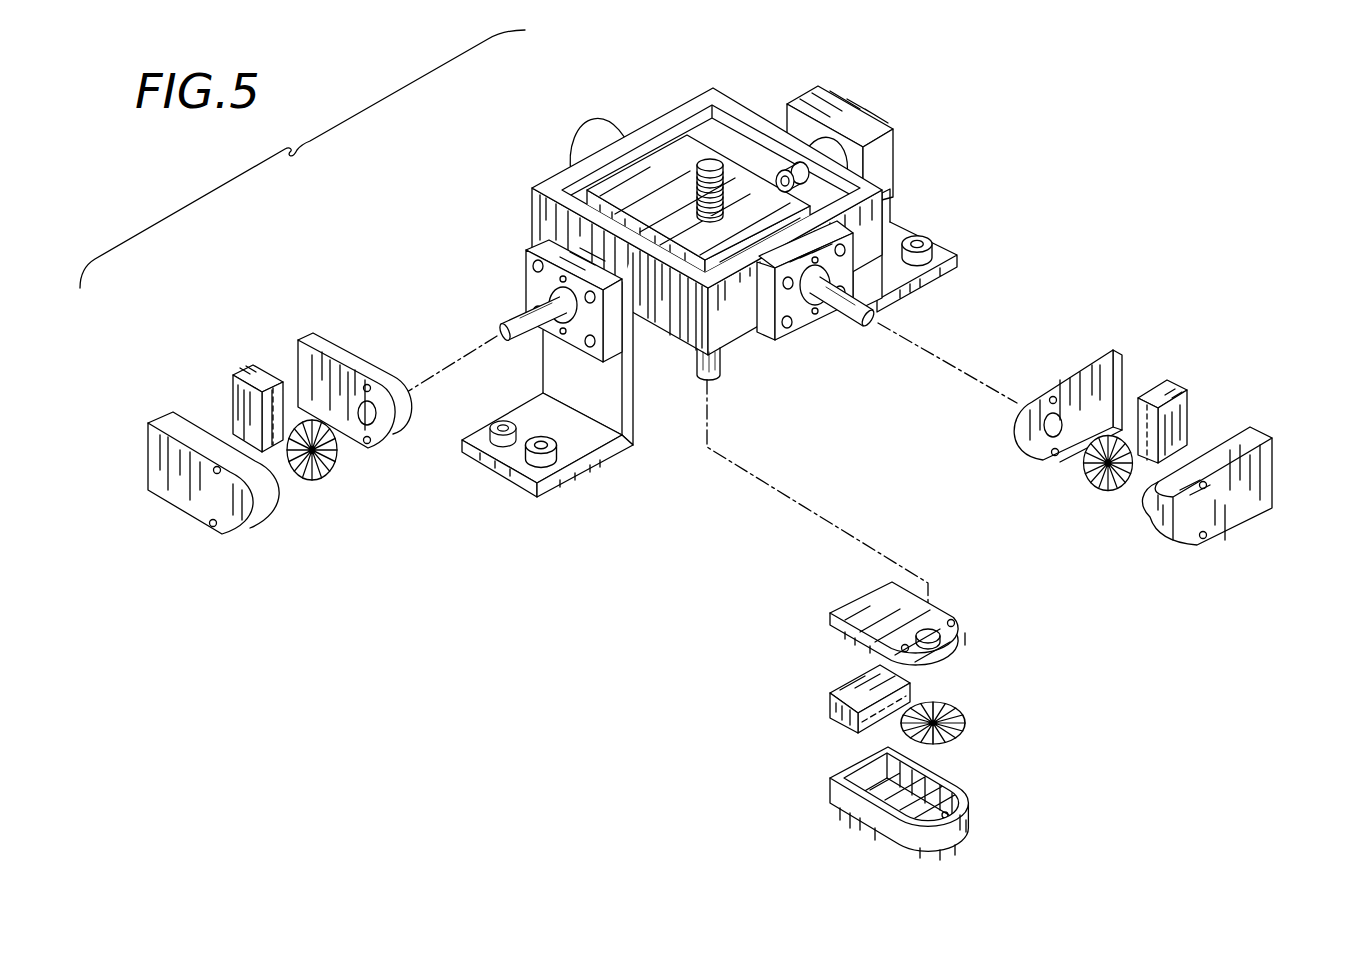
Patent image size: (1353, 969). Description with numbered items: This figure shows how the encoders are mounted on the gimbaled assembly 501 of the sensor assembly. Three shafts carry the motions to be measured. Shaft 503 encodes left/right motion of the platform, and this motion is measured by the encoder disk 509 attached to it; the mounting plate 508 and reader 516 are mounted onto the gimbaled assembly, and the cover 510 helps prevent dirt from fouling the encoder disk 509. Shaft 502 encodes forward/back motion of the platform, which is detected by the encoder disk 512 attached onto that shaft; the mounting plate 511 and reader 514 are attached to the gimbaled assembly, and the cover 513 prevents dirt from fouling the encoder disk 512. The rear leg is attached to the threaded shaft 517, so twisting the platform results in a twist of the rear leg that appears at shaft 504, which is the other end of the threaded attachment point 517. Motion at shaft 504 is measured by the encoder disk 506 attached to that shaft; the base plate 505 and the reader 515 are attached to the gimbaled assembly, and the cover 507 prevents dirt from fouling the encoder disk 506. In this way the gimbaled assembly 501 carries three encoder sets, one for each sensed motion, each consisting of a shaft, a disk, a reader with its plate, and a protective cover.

The gimbaled assembly 501 is at (643, 116).
The shaft 502 is at (520, 300).
The shaft 503 is at (846, 326).
The shaft 504 is at (723, 368).
The base plate 505 is at (962, 620).
The encoder disk 506 is at (967, 718).
The cover 507 is at (968, 815).
The mounting plate 508 is at (1125, 365).
The encoder disk 509 is at (1100, 490).
The cover 510 is at (1270, 460).
The mounting plate 511 is at (325, 340).
The encoder disk 512 is at (320, 478).
The cover 513 is at (170, 413).
The reader 514 is at (247, 373).
The reader 515 is at (833, 690).
The reader 516 is at (1183, 410).
The threaded shaft 517 is at (712, 162).